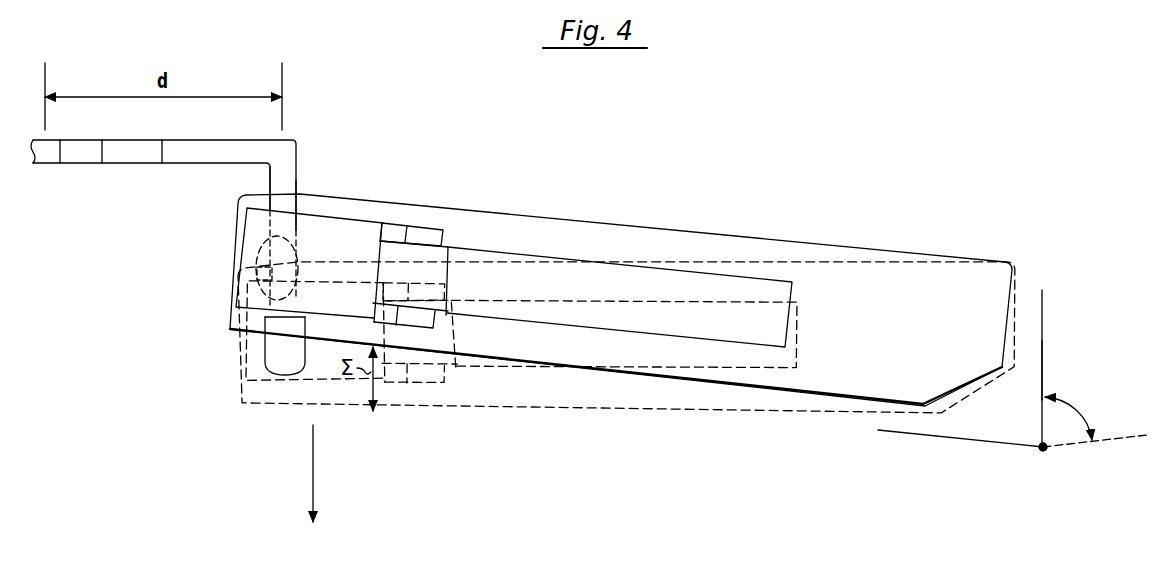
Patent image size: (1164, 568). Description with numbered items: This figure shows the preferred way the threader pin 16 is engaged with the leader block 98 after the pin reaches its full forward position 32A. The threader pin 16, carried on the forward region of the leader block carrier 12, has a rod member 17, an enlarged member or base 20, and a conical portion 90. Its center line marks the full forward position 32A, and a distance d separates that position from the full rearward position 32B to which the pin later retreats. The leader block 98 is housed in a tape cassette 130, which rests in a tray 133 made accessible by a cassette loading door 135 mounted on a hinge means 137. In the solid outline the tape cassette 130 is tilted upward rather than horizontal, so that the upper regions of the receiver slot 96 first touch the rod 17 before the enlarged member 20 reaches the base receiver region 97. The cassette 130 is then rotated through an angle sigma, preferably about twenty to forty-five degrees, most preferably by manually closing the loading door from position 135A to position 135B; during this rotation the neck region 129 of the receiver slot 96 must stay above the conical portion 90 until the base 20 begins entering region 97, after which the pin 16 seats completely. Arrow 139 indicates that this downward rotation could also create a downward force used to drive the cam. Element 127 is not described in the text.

The leader block carrier 12 is at (132, 168).
The threader pin 16 is at (264, 178).
The rod member 17 is at (267, 260).
The enlarged member 20 is at (263, 350).
The full forward position 32A is at (277, 85).
The full rearward position 32B is at (46, 85).
The conical portion 90 is at (265, 317).
The receiver slot 96 is at (303, 228).
The base receiver region 97 is at (257, 282).
The leader block 98 is at (355, 218).
The slide member 127 is at (422, 226).
The neck region 129 is at (265, 237).
The tape cassette 130 is at (555, 218).
The tray 133 is at (982, 446).
The cassette loading door 135 is at (1045, 328).
The door open position 135A is at (1143, 440).
The door closed position 135B is at (1046, 365).
The hinge means 137 is at (1037, 456).
The arrow 139 is at (315, 488).